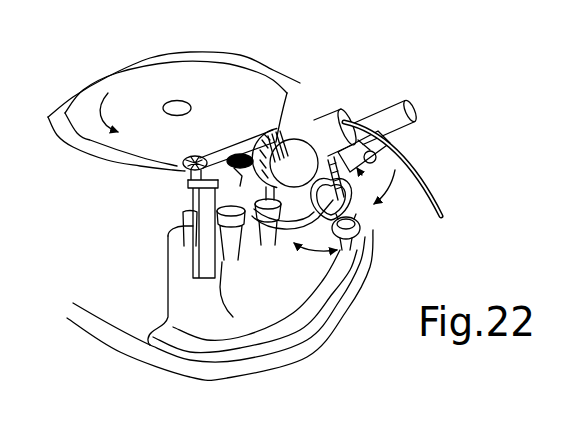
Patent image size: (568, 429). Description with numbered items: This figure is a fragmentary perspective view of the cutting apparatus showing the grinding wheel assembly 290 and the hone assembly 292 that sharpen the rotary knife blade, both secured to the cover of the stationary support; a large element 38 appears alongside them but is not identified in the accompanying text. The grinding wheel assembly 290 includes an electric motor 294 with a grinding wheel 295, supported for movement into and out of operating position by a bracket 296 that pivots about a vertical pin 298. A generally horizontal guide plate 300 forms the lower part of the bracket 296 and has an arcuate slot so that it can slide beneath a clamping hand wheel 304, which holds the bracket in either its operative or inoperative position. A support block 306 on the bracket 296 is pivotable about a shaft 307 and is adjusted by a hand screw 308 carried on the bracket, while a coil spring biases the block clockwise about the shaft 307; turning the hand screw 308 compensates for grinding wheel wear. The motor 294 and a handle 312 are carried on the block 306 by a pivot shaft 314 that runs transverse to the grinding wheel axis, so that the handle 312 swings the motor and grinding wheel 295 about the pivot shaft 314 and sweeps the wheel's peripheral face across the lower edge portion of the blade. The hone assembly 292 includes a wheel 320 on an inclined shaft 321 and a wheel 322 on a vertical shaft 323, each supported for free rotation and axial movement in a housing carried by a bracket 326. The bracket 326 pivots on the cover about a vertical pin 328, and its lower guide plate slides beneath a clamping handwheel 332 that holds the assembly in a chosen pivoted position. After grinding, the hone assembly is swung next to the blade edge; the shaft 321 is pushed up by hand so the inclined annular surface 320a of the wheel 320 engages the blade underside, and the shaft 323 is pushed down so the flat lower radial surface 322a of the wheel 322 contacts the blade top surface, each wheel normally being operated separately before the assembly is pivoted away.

The disc platter 38 is at (138, 48).
The grinding wheel assembly 290 is at (350, 100).
The hone assembly 292 is at (160, 236).
The electric motor 294 is at (316, 124).
The grinding wheel 295 is at (280, 140).
The bracket 296 is at (294, 236).
The vertical pin 298 is at (240, 151).
The guide plate 300 is at (255, 250).
The clamping hand wheel 304 is at (270, 237).
The support block 306 is at (382, 165).
The shaft 307 is at (370, 143).
The hand screw 308 is at (366, 235).
The handle 312 is at (421, 98).
The pivot shaft 314 is at (397, 192).
The wheel 320 is at (239, 180).
The inclined annular surface 320a is at (253, 150).
The inclined shaft 321 is at (285, 159).
The wheel 322 is at (191, 154).
The flat lower radial surface 322a is at (191, 176).
The vertical shaft 323 is at (189, 182).
The bracket 326 is at (193, 258).
The vertical pin 328 is at (184, 226).
The clamping handwheel 332 is at (218, 286).